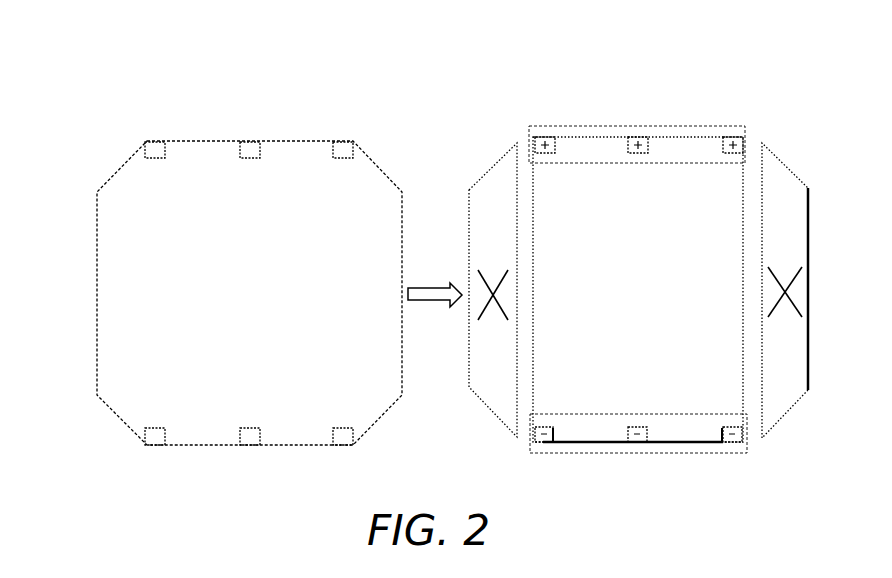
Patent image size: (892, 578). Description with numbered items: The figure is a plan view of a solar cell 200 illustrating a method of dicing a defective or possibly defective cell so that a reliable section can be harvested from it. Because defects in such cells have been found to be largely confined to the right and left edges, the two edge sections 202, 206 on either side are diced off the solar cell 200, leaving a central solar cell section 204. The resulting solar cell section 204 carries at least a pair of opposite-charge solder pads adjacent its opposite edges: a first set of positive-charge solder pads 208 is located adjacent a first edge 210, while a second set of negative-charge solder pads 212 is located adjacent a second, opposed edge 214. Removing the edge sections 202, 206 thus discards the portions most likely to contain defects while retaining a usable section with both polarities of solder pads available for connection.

The solar cell 200 is at (147, 90).
The edge section 202 is at (507, 177).
The solar cell section 204 is at (657, 303).
The edge section 206 is at (778, 180).
The positive-charge solder pads 208 is at (638, 126).
The first edge 210 is at (685, 137).
The negative-charge solder pads 212 is at (638, 453).
The second edge 214 is at (685, 440).